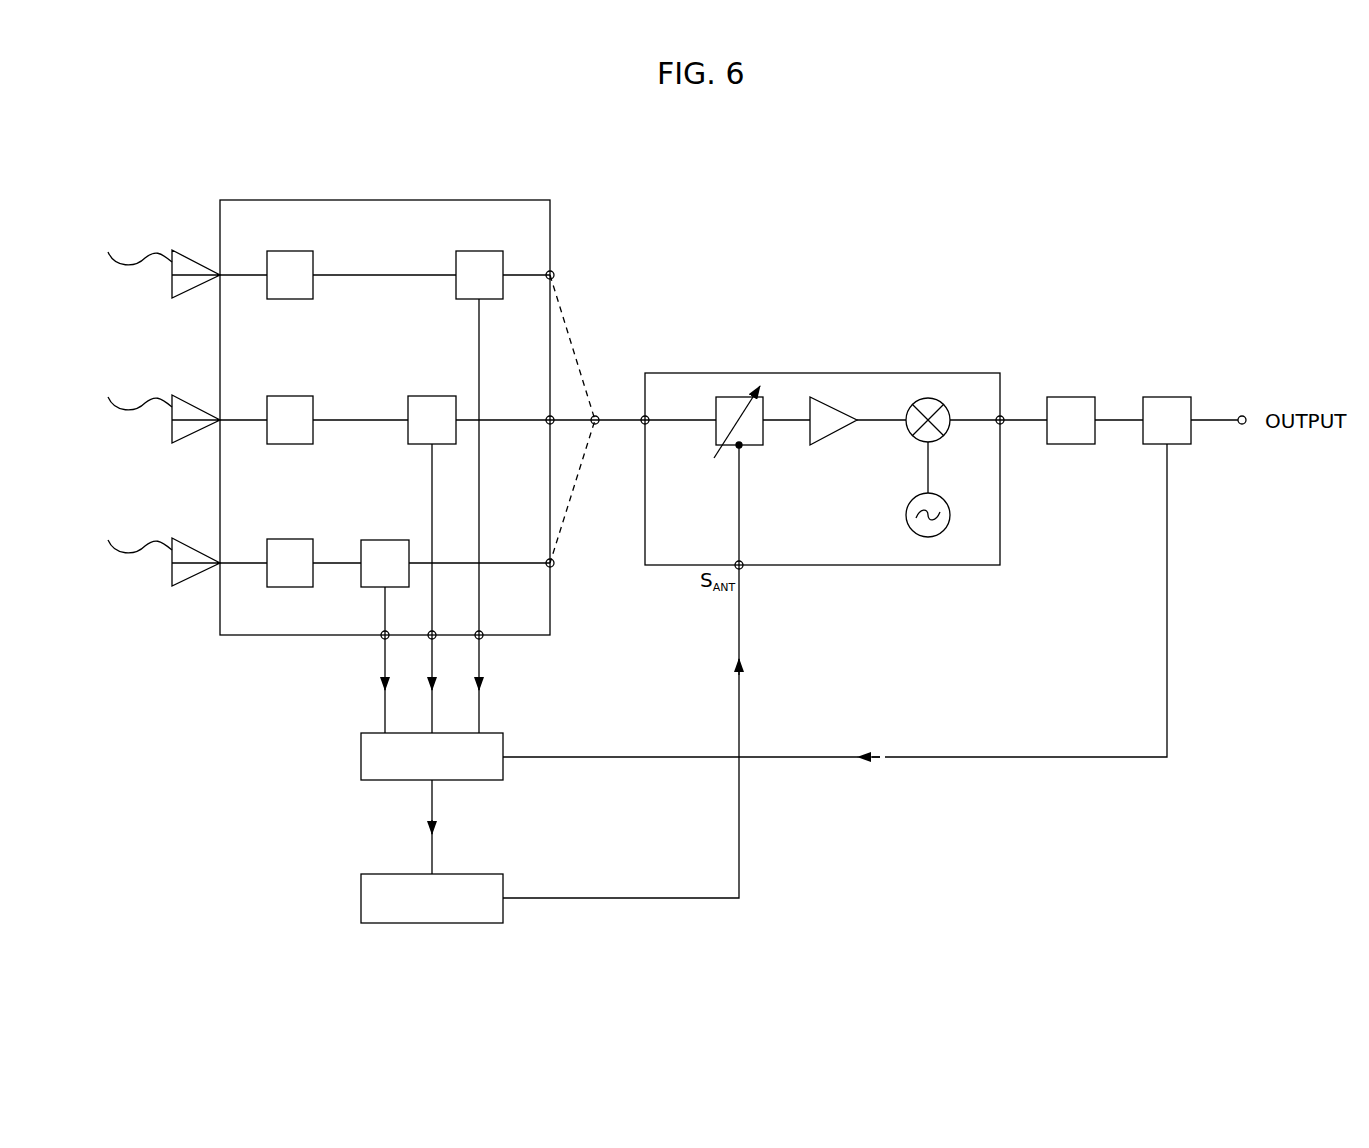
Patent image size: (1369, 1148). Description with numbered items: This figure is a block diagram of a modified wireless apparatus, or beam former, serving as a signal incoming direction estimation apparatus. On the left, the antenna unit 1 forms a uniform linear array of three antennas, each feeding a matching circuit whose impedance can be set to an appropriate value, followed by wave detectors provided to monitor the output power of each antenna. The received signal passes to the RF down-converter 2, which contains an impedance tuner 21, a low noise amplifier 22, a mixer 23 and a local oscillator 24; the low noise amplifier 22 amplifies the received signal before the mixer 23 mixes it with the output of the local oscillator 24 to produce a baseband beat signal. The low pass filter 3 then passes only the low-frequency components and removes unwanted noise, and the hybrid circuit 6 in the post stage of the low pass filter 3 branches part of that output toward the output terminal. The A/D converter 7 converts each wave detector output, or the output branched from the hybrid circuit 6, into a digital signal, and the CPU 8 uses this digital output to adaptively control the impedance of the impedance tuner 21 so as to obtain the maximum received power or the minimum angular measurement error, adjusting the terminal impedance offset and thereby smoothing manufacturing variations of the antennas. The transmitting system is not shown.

The antenna unit 1 is at (474, 200).
The RF down-converter 2 is at (866, 445).
The low pass filter 3 is at (1070, 397).
The hybrid circuit 6 is at (1163, 397).
The A/D converter 7 is at (361, 757).
The CPU 8 is at (361, 900).
The impedance tuner 21 is at (728, 397).
The low noise amplifier 22 is at (812, 440).
The mixer 23 is at (932, 396).
The local oscillator 24 is at (906, 515).